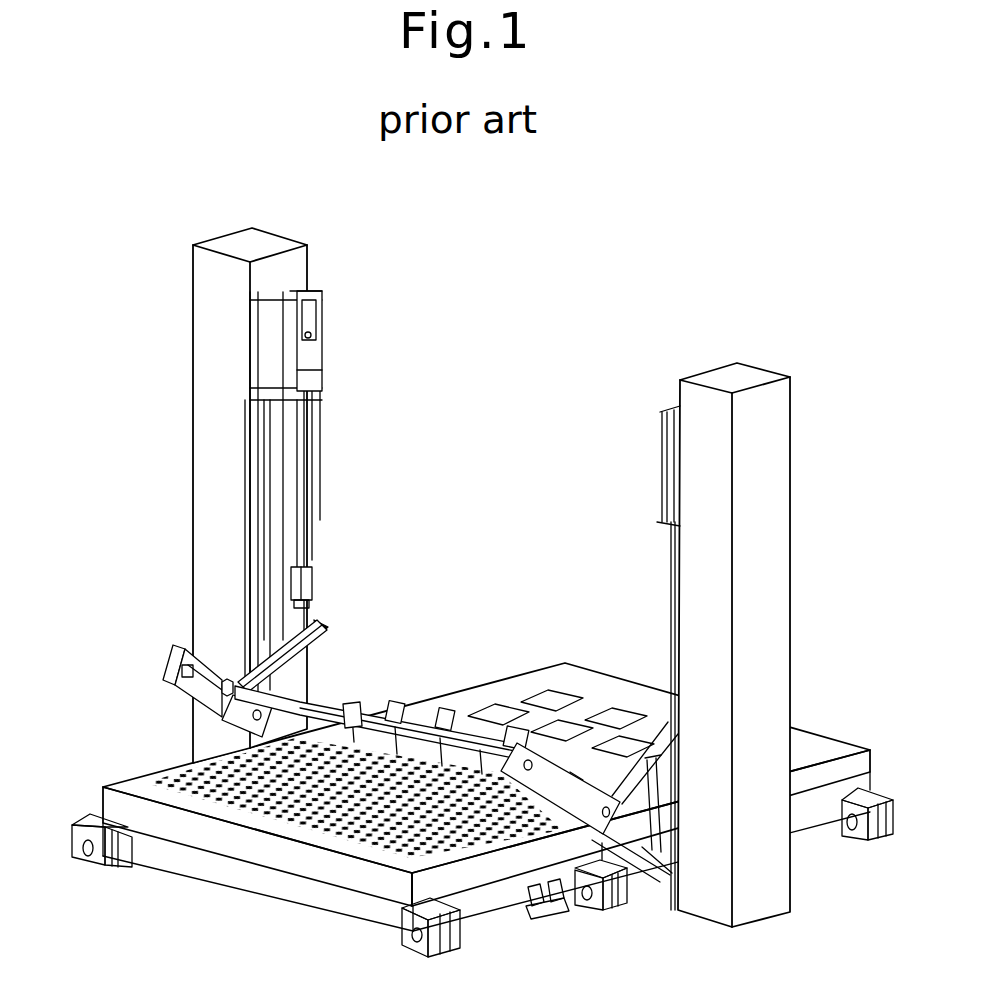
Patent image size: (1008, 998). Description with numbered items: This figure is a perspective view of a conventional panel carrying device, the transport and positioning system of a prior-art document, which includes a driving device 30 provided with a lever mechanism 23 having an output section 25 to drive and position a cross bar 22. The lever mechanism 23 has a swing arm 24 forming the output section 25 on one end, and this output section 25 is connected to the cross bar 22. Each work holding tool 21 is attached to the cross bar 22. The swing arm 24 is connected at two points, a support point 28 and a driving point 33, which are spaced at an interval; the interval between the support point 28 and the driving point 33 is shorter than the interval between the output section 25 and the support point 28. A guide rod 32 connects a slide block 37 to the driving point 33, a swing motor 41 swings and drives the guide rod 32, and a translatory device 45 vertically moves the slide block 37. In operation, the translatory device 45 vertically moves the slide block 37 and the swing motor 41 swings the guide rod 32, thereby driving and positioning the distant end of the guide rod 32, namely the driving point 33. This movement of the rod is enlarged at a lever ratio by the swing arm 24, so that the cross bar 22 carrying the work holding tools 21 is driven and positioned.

The work holding tool 21 is at (470, 745).
The cross bar 22 is at (360, 706).
The lever mechanism 23 is at (341, 715).
The swing arm 24 is at (170, 650).
The output section 25 is at (172, 667).
The support point 28 is at (326, 624).
The driving device 30 is at (228, 569).
The guide rod 32 is at (328, 628).
The driving point 33 is at (308, 694).
The slide block 37 is at (268, 604).
The swing motor 41 is at (312, 572).
The translatory device 45 is at (300, 282).